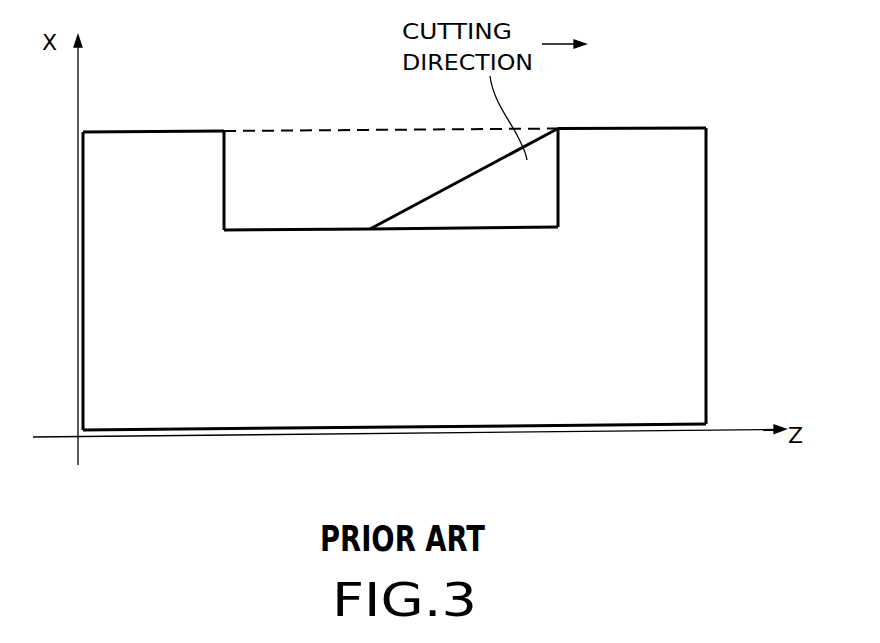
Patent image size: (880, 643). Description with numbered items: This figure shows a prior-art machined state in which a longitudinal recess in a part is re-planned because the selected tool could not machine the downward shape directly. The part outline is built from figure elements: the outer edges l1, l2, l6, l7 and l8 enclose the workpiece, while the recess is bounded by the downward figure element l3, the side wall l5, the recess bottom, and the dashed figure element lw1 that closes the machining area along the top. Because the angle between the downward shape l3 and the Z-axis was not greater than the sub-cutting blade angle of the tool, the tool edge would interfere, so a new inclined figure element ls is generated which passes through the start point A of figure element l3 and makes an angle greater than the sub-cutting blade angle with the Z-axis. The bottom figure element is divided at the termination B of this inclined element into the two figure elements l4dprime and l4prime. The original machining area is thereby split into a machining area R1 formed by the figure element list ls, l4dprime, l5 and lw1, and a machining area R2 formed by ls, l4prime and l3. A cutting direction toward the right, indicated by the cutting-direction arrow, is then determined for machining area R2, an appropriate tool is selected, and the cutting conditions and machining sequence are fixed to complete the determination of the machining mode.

The right side edge of workpiece l1 is at (692, 276).
The top right edge l2 is at (632, 143).
The figure element (downward shape of longitudinal recess) l3 is at (571, 178).
The figure element l4' l4prime is at (464, 242).
The figure element l4'' l4dprime is at (297, 244).
The figure element (recess wall) l5 is at (209, 180).
The top left edge l6 is at (153, 145).
The left side edge l7 is at (96, 281).
The bottom edge l8 is at (394, 416).
The figure element lw1 is at (391, 146).
The generated figure element ls is at (464, 179).
The machining area R1 is at (315, 193).
The machining area R2 is at (505, 201).
The start point A is at (558, 128).
The termination point B is at (373, 232).